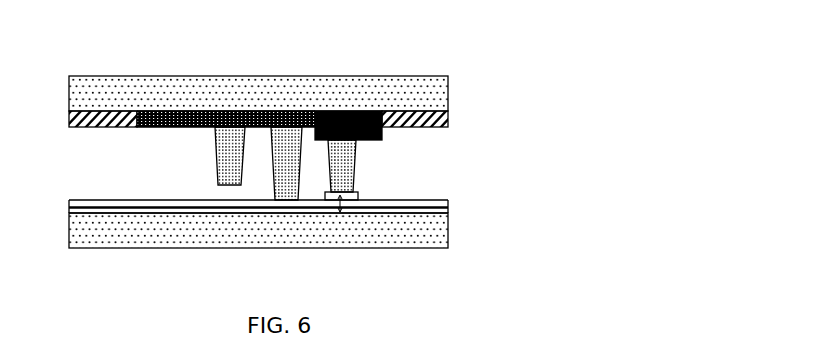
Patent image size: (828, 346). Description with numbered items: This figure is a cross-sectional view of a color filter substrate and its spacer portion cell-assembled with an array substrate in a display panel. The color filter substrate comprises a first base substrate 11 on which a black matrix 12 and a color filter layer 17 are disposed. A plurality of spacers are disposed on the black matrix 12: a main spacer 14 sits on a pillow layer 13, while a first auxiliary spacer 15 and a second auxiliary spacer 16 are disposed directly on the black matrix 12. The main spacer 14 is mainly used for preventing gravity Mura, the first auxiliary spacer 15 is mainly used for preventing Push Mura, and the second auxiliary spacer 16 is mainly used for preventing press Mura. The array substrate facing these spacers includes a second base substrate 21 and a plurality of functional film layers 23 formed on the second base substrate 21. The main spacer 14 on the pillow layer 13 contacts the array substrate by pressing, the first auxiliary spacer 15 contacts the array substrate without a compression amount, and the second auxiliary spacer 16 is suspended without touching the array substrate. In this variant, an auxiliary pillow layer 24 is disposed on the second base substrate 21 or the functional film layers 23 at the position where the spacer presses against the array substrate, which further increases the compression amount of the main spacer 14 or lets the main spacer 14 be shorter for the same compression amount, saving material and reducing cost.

The first base substrate 11 is at (148, 105).
The black matrix 12 is at (203, 112).
The pillow layer 13 is at (377, 140).
The main spacer 14 is at (370, 112).
The first auxiliary spacer 15 is at (319, 112).
The second auxiliary spacer 16 is at (257, 112).
The color filter layer 17 is at (86, 118).
The second base substrate 21 is at (120, 227).
The functional film layers 23 is at (240, 210).
The auxiliary pillow layer 24 is at (330, 197).